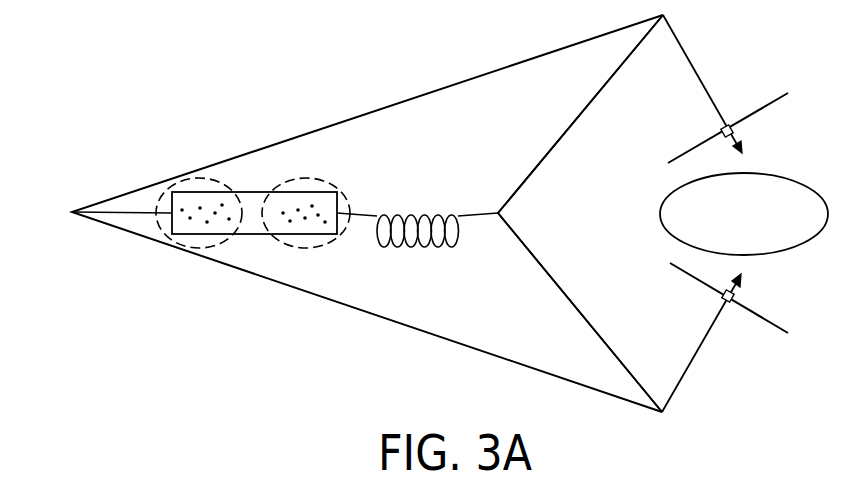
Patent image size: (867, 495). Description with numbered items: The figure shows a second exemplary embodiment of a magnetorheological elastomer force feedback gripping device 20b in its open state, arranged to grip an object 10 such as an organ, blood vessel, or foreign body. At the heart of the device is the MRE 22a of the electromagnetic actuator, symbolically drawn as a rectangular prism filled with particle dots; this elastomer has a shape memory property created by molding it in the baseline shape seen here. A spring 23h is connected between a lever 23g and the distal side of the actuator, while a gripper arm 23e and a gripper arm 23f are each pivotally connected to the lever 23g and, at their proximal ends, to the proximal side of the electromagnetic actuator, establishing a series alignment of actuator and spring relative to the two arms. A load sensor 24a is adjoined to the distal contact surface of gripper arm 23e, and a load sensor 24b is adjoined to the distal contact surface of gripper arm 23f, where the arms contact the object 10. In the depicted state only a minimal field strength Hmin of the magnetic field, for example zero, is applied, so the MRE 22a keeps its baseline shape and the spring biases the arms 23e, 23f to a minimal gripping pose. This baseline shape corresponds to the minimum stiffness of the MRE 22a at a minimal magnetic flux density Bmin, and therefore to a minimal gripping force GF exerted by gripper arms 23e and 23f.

The object 10 is at (662, 226).
The force feedback gripping device 20b is at (592, 204).
The MRE 22a is at (255, 236).
The gripper arm 23e is at (700, 76).
The gripper arm 23f is at (700, 348).
The lever 23g is at (547, 153).
The spring 23h is at (420, 248).
The load sensor 24a is at (741, 128).
The load sensor 24b is at (741, 297).
The minimal field strength Hmin is at (388, 143).
The minimal magnetic flux density Bmin is at (257, 191).
The gripping force GF is at (714, 215).